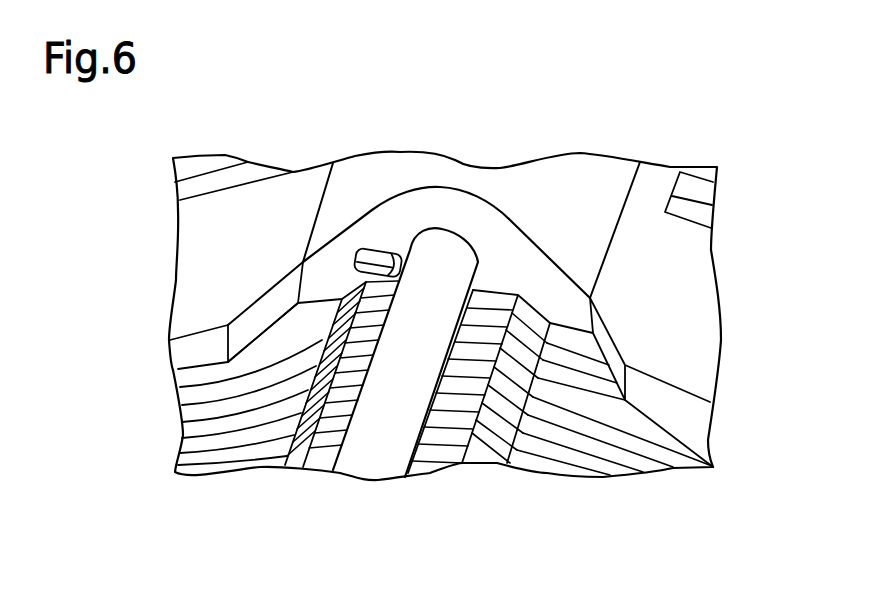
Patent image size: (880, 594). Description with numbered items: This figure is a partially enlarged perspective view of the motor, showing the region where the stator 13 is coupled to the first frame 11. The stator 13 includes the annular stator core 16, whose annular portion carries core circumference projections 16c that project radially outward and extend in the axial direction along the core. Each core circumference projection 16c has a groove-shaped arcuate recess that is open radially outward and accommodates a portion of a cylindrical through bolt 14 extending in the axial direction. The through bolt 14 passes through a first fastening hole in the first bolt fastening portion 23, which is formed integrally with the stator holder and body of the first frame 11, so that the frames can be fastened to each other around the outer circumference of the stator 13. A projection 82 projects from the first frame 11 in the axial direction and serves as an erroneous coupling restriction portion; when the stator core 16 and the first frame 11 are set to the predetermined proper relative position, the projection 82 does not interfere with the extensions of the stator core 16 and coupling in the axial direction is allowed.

The first frame 11 is at (698, 257).
The stator 13 is at (703, 450).
The through bolt 14 is at (452, 270).
The stator core 16 is at (625, 452).
The core circumference projection 16c is at (493, 297).
The first bolt fastening portion 23 is at (457, 203).
The projection 82 is at (370, 279).